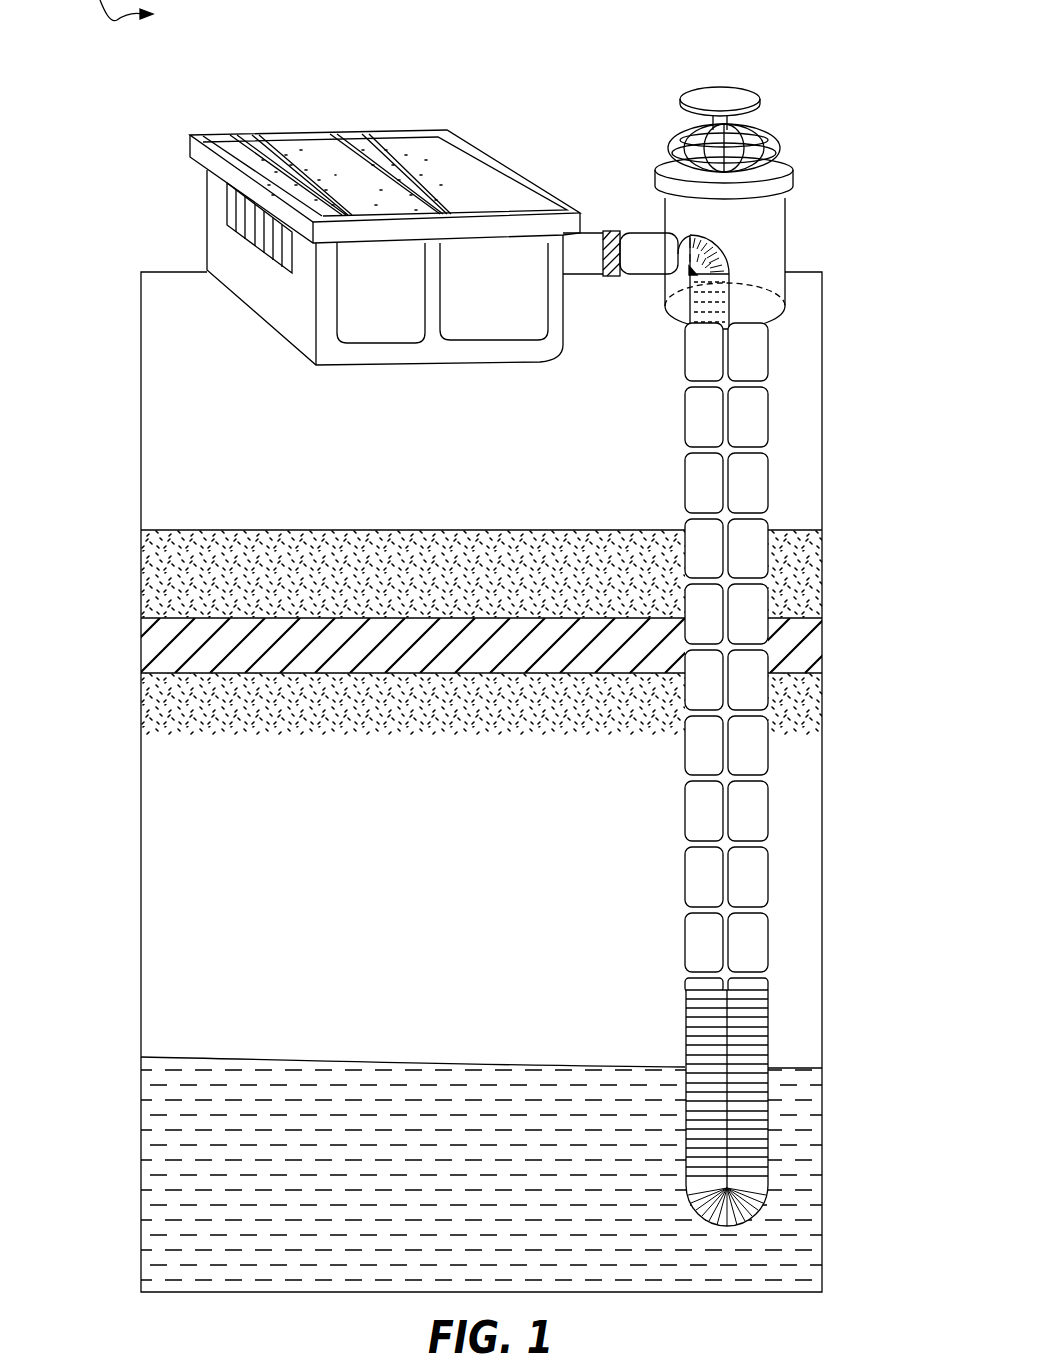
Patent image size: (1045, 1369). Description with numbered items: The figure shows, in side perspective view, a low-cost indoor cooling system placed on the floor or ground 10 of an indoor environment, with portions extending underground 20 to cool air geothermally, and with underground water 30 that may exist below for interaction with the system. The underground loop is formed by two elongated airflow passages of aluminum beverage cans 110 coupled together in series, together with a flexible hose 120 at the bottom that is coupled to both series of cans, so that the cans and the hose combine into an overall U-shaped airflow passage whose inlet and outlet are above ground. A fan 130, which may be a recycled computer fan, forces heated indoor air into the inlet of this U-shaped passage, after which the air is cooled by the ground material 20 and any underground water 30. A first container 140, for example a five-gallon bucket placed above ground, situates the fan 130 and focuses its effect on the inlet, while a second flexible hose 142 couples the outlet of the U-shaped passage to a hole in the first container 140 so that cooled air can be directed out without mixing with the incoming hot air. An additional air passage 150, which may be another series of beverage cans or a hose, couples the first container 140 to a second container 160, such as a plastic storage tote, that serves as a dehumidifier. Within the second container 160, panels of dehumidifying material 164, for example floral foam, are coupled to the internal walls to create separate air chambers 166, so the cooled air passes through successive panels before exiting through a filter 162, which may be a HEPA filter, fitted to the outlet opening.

The floor or ground 10 is at (440, 430).
The underground / ground material 20 is at (456, 960).
The underground water 30 is at (177, 1202).
The aluminum beverage cans 110 is at (753, 416).
The flexible hose 120 is at (750, 1143).
The fan 130 is at (708, 103).
The first container 140 is at (764, 220).
The second flexible hose 142 is at (729, 290).
The additional air passage 150 is at (630, 240).
The second container 160 is at (228, 143).
The filter 162 is at (240, 211).
The dehumidifying material 164 is at (415, 165).
The air chambers 166 is at (497, 178).